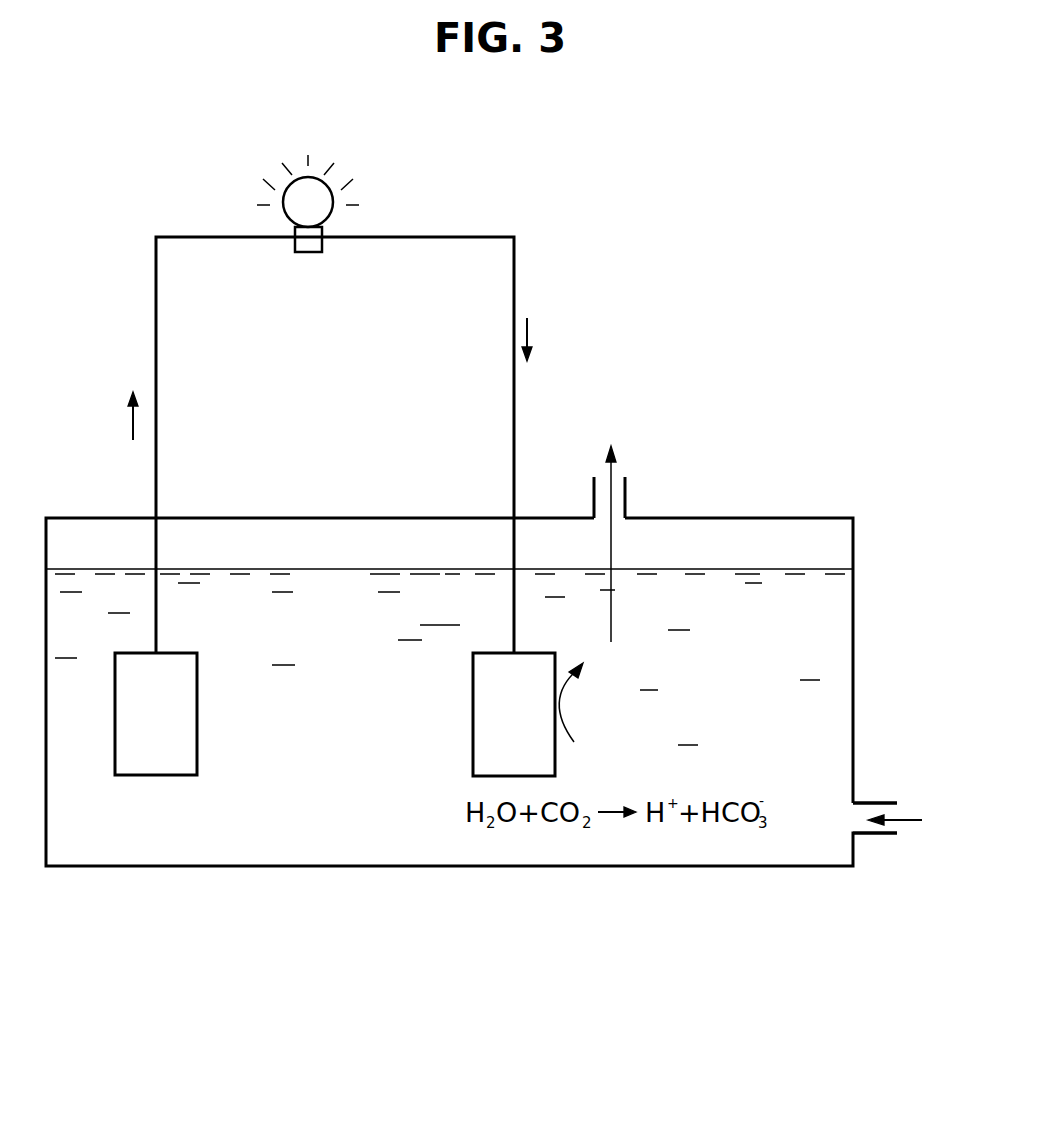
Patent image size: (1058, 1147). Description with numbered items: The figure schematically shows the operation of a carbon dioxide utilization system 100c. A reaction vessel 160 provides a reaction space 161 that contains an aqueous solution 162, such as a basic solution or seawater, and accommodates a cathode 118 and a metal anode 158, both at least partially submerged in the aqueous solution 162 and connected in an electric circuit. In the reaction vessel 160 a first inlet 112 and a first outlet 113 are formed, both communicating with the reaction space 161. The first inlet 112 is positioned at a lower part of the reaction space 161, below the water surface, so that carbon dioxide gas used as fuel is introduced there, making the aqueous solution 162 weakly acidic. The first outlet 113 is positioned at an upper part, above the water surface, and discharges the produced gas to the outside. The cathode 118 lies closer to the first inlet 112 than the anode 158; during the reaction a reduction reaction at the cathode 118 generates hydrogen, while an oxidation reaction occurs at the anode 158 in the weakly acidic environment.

The carbon dioxide utilization system 100c is at (824, 412).
The first inlet 112 is at (858, 820).
The first outlet 113 is at (618, 522).
The cathode 118 is at (485, 720).
The metal anode 158 is at (165, 762).
The reaction vessel 160 is at (600, 866).
The reaction space 161 is at (722, 538).
The aqueous solution 162 is at (802, 622).